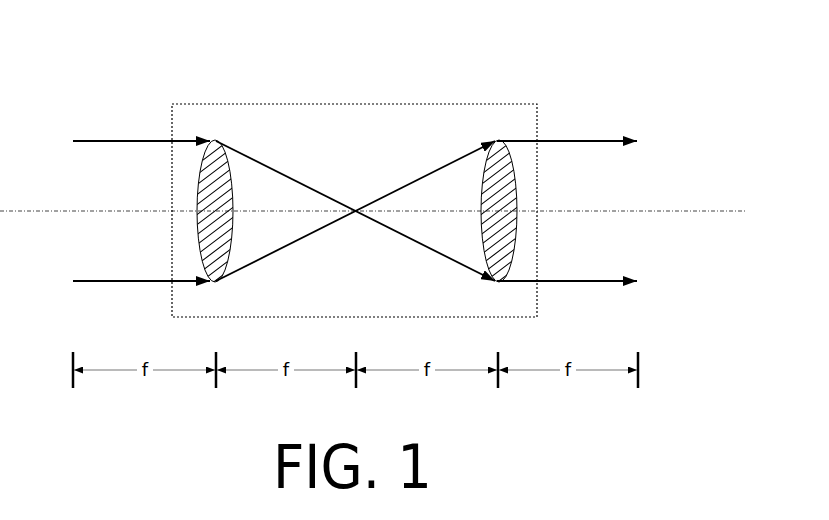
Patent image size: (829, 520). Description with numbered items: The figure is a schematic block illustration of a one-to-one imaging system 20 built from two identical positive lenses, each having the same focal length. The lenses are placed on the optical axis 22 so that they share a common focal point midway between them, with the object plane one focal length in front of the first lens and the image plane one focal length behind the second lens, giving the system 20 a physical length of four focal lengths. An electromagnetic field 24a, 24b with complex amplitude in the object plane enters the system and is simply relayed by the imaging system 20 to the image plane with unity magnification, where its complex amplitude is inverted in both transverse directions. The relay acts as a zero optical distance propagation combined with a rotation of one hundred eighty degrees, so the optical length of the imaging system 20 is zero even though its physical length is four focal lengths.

The 1:1 imaging system 20 is at (537, 60).
The optical axis 22 is at (678, 211).
The electromagnetic field 24a is at (112, 141).
The electromagnetic field 24b is at (112, 281).